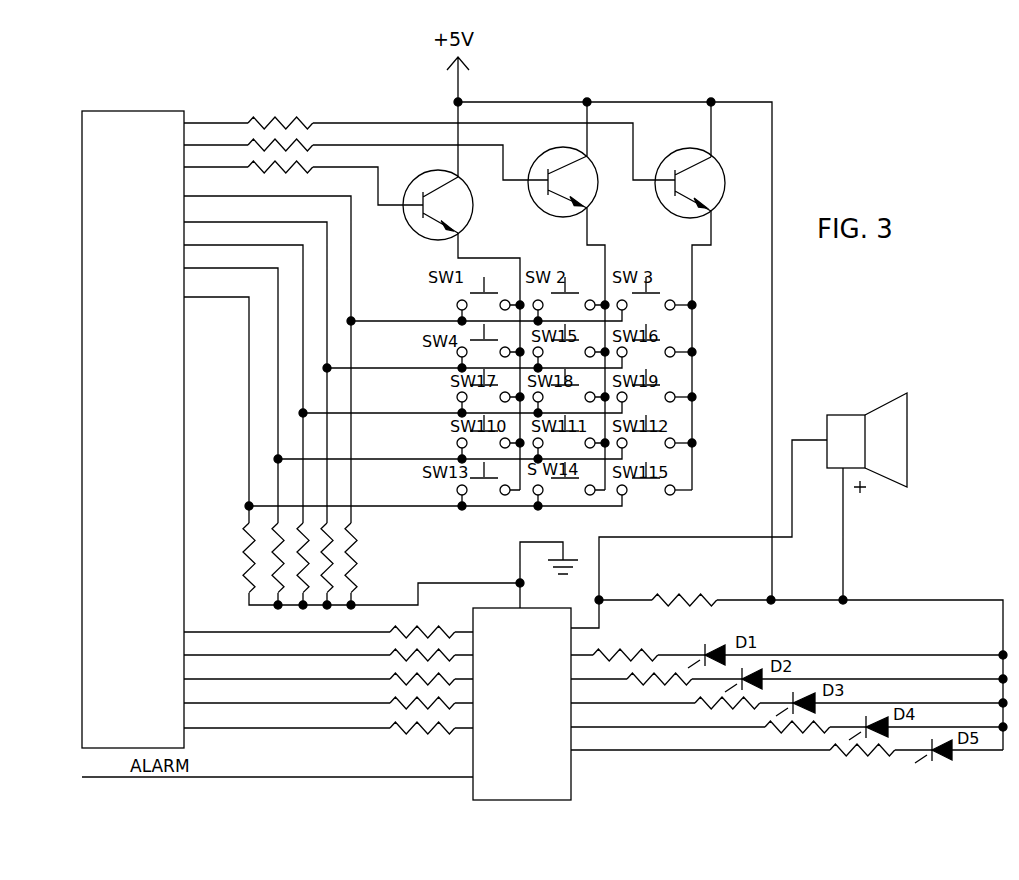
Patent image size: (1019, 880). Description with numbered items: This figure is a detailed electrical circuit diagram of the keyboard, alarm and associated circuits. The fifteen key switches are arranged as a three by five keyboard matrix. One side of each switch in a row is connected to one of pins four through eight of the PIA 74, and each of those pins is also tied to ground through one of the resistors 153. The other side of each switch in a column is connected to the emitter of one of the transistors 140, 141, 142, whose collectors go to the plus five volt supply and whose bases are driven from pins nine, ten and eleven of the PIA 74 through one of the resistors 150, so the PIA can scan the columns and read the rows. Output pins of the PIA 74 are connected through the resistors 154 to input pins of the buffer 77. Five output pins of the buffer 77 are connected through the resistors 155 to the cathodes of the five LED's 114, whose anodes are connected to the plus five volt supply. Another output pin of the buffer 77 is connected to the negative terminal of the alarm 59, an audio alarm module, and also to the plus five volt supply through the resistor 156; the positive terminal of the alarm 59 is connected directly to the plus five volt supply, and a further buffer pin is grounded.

The PIA 74 is at (104, 111).
The resistors 150 is at (269, 115).
The transistor 140 is at (414, 186).
The transistor 141 is at (538, 165).
The transistor 142 is at (672, 162).
The resistors 153 is at (355, 539).
The resistors 154 is at (424, 739).
The buffer 77 is at (573, 777).
The resistor 156 is at (665, 597).
The alarm 59 is at (866, 414).
The resistors 155 is at (877, 751).
The LED's 114 is at (956, 748).